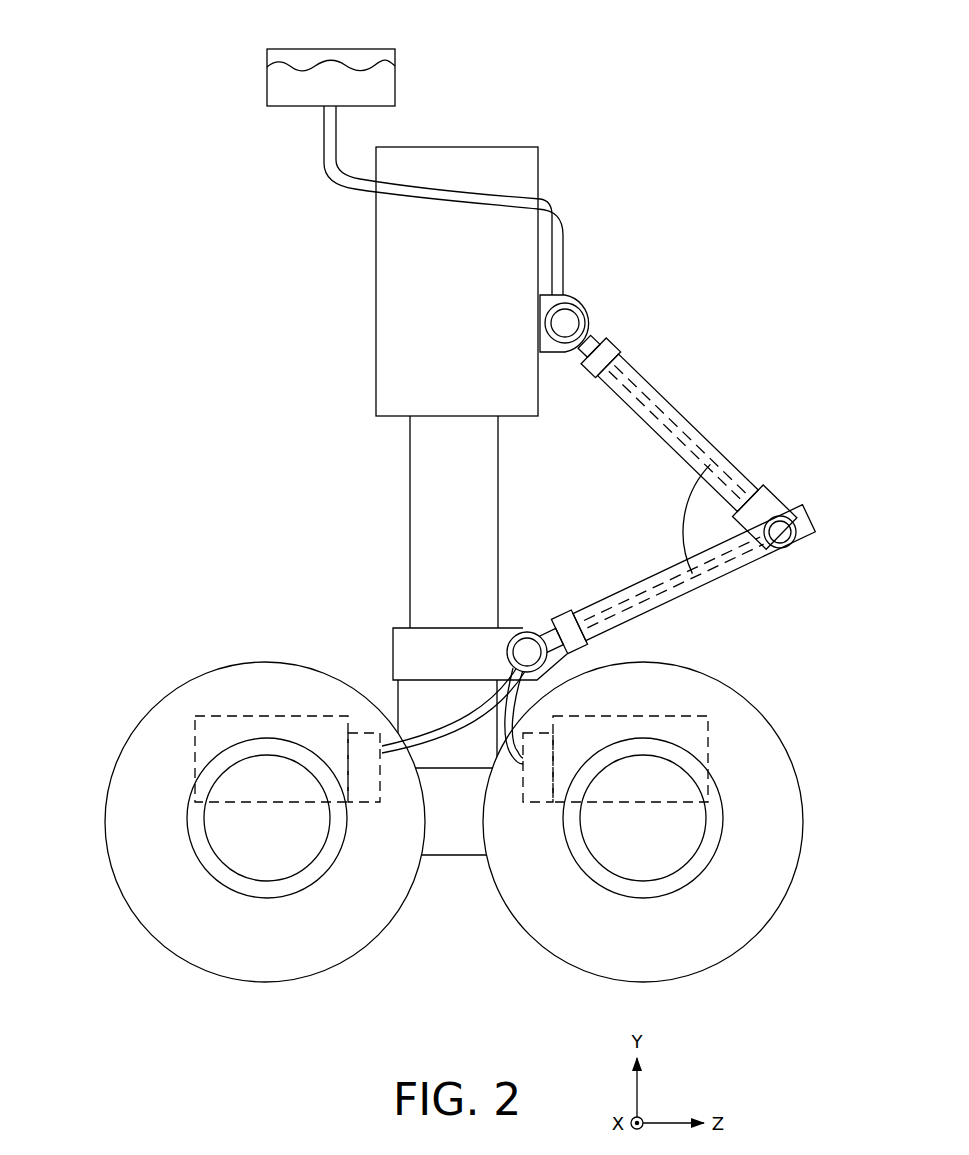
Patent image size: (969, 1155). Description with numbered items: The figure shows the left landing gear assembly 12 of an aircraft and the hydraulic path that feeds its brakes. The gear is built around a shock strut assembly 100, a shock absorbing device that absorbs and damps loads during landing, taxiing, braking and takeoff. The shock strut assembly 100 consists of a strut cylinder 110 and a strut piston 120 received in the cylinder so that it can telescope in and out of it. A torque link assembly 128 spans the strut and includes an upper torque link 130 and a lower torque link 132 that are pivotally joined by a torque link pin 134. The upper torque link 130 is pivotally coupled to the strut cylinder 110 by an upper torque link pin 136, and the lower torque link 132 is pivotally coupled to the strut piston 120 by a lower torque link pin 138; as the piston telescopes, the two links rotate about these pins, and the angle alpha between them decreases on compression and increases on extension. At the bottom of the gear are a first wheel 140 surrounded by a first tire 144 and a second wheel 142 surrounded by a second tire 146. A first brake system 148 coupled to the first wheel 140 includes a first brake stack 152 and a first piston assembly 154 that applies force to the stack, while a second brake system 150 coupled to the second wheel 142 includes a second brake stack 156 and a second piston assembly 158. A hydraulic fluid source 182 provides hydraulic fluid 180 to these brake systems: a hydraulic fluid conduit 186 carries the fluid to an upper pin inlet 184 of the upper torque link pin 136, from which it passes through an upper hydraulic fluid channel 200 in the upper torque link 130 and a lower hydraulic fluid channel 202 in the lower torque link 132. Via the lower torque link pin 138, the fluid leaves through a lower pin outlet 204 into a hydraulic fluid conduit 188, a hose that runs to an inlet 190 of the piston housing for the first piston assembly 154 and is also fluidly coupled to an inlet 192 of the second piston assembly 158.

The left landing gear assembly 12 is at (203, 110).
The shock strut assembly 100 is at (323, 140).
The strut cylinder 110 is at (419, 294).
The strut piston 120 is at (433, 508).
The torque link assembly 128 is at (822, 416).
The upper torque link 130 is at (752, 463).
The lower torque link 132 is at (666, 562).
The torque link pin 134 is at (786, 548).
The upper torque link pin 136 is at (545, 321).
The lower torque link pin 138 is at (527, 648).
The first wheel 140 is at (711, 851).
The second wheel 142 is at (205, 866).
The first tire 144 is at (770, 733).
The second tire 146 is at (106, 808).
The first brake system 148 is at (518, 903).
The second brake system 150 is at (352, 621).
The first brake stack 152 is at (604, 804).
The first piston assembly 154 is at (537, 804).
The second brake stack 156 is at (308, 714).
The second piston assembly 158 is at (347, 731).
The hydraulic fluid 180 is at (309, 99).
The hydraulic fluid source 182 is at (397, 55).
The upper pin inlet 184 is at (580, 295).
The hydraulic fluid conduit 186 is at (564, 216).
The hydraulic fluid conduit 188 is at (508, 661).
The inlet 190 is at (520, 771).
The inlet 192 is at (387, 760).
The upper hydraulic fluid channel 200 is at (676, 386).
The lower hydraulic fluid channel 202 is at (722, 596).
The lower pin outlet 204 is at (514, 649).